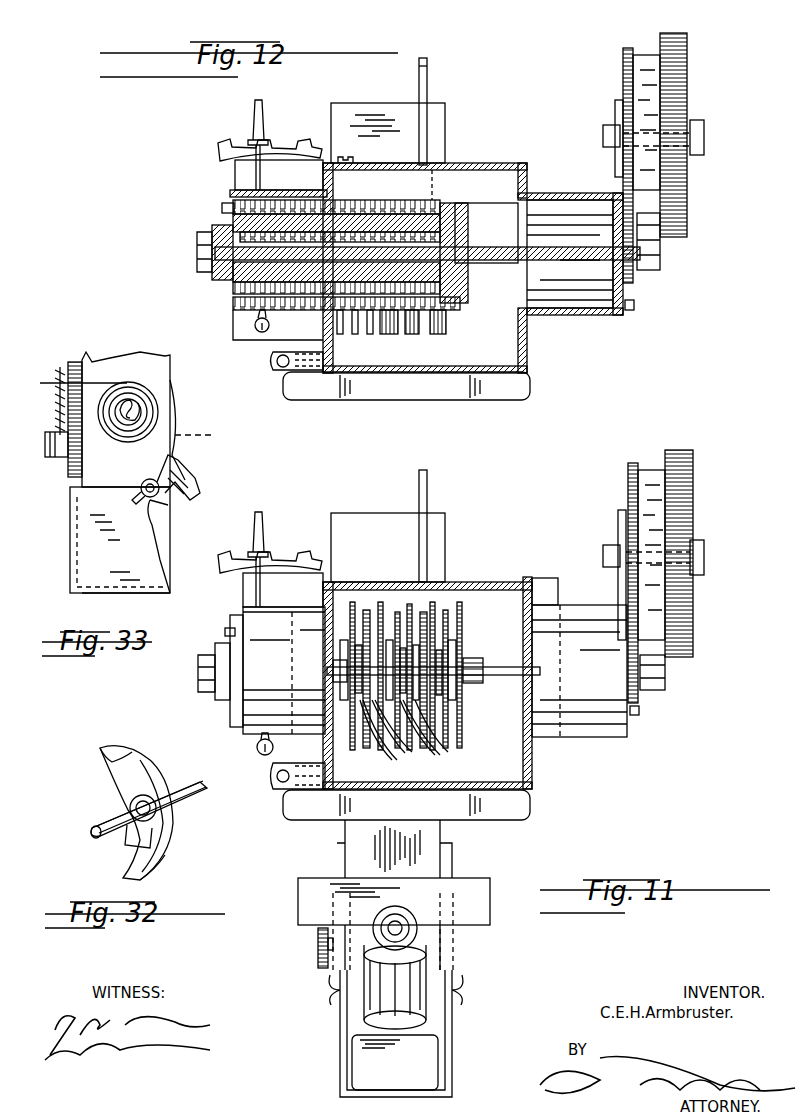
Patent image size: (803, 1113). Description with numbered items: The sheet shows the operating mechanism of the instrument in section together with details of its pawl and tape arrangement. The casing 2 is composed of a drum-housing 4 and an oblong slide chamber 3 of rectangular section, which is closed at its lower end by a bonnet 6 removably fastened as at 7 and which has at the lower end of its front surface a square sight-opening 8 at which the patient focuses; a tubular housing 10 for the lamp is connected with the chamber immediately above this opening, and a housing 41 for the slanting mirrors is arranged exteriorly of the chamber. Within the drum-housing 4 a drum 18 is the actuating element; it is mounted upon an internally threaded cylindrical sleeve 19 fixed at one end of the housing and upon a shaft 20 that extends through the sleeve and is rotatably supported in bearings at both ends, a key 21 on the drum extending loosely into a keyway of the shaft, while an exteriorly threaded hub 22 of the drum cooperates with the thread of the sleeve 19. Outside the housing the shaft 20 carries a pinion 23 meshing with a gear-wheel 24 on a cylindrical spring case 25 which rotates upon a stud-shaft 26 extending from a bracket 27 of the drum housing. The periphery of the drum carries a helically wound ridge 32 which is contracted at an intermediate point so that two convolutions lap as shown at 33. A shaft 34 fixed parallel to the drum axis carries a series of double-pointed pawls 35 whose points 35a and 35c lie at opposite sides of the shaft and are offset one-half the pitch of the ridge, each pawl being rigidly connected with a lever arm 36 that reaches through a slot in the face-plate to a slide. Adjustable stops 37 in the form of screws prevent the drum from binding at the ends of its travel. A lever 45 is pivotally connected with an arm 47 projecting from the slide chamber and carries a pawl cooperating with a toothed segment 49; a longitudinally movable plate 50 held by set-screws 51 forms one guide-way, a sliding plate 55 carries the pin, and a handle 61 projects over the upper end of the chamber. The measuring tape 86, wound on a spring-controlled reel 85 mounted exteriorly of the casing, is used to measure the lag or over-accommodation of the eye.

In FIG. 11, the casing 2 is at (340, 833).
In FIG. 33, the casing 2 is at (75, 482).
In FIG. 11, the slide chamber 3 is at (435, 998).
In FIG. 12, the drum-housing 4 is at (470, 163).
In FIG. 11, the drum-housing 4 is at (473, 582).
In FIG. 11, the bonnet 6 is at (452, 1022).
In FIG. 33, the bonnet 6 is at (100, 594).
In FIG. 33, the fastening 7 is at (168, 484).
In FIG. 11, the sight-opening 8 is at (412, 1060).
In FIG. 33, the sight-opening 8 is at (165, 540).
In FIG. 11, the tubular housing 10 is at (425, 952).
In FIG. 12, the drum 18 is at (482, 288).
In FIG. 11, the drum 18 is at (530, 613).
In FIG. 12, the cylindrical sleeve 19 is at (470, 322).
In FIG. 12, the shaft 20 is at (492, 245).
In FIG. 12, the key 21 is at (465, 205).
In FIG. 12, the hub 22 is at (226, 280).
In FIG. 12, the pinion 23 is at (660, 272).
In FIG. 11, the pinion 23 is at (660, 694).
In FIG. 12, the gear-wheel 24 is at (622, 62).
In FIG. 11, the gear-wheel 24 is at (627, 480).
In FIG. 12, the spring case 25 is at (688, 52).
In FIG. 11, the spring case 25 is at (694, 482).
In FIG. 12, the stud-shaft 26 is at (705, 136).
In FIG. 11, the stud-shaft 26 is at (706, 553).
In FIG. 12, the bracket 27 is at (614, 107).
In FIG. 11, the bracket 27 is at (617, 522).
In FIG. 12, the helically wound ridge 32 is at (449, 185).
In FIG. 12, the lapping convolutions 33 is at (345, 164).
In FIG. 11, the shaft 34 is at (495, 662).
In FIG. 32, the shaft 34 is at (193, 800).
In FIG. 12, the double-pointed pawl 35 is at (436, 342).
In FIG. 11, the double-pointed pawl 35 is at (468, 712).
In FIG. 32, the double-pointed pawl 35 is at (165, 778).
In FIG. 32, the pawl point 35a is at (108, 748).
In FIG. 32, the pawl point 35c is at (160, 872).
In FIG. 11, the lever arm 36 is at (400, 762).
In FIG. 12, the adjustable stops 37 is at (634, 308).
In FIG. 11, the adjustable stops 37 is at (640, 712).
In FIG. 11, the mirror housing 41 is at (490, 882).
In FIG. 12, the lever 45 is at (264, 120).
In FIG. 11, the lever 45 is at (264, 530).
In FIG. 12, the arm 47 is at (268, 330).
In FIG. 11, the arm 47 is at (273, 750).
In FIG. 12, the toothed segment 49 is at (218, 146).
In FIG. 11, the toothed segment 49 is at (218, 559).
In FIG. 12, the longitudinally movable plate 50 is at (534, 392).
In FIG. 11, the longitudinally movable plate 50 is at (534, 812).
In FIG. 12, the set-screws 51 is at (283, 368).
In FIG. 11, the set-screws 51 is at (298, 776).
In FIG. 33, the plate 55 is at (83, 368).
In FIG. 12, the handle 61 is at (428, 78).
In FIG. 11, the handle 61 is at (428, 492).
In FIG. 11, the spring-controlled reel 85 is at (317, 940).
In FIG. 33, the spring-controlled reel 85 is at (148, 415).
In FIG. 33, the measuring tape 86 is at (45, 378).